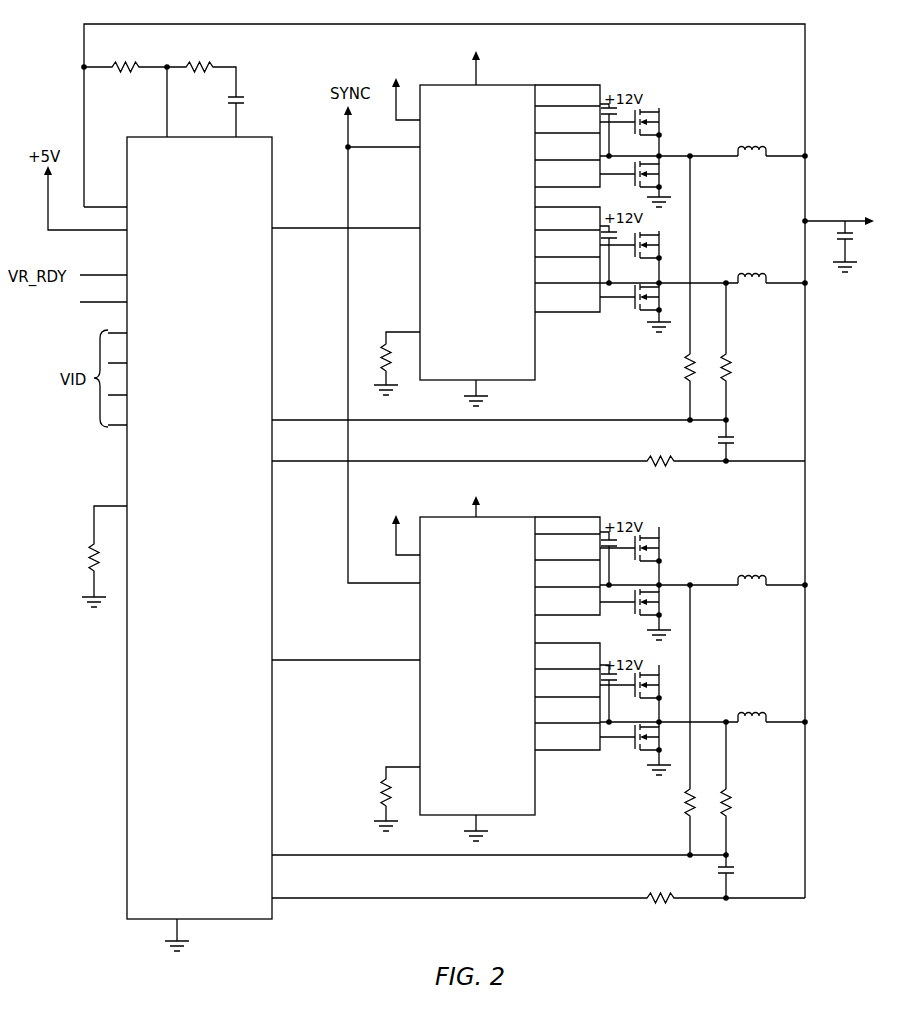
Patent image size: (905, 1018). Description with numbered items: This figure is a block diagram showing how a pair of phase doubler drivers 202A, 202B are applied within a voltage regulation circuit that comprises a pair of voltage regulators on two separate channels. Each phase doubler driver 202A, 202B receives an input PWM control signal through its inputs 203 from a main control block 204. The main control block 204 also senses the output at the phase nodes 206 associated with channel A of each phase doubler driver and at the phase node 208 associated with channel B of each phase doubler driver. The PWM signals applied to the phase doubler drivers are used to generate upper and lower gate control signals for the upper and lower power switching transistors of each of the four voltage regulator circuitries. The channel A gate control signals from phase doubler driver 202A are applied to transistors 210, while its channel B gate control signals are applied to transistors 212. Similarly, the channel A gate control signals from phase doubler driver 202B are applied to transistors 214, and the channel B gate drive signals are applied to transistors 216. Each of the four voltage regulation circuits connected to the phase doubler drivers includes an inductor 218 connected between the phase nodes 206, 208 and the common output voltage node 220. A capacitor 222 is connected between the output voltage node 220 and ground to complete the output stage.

The phase doubler driver 202A is at (535, 360).
The phase doubler driver 202B is at (535, 797).
The inputs 203 is at (312, 230).
The main control block 204 is at (150, 676).
The phase nodes 206 is at (663, 153).
The phase node 208 is at (663, 282).
The transistors 210 is at (661, 108).
The transistors 212 is at (632, 238).
The transistors 214 is at (634, 548).
The transistors 216 is at (655, 687).
The inductor 218 is at (757, 140).
The output voltage node 220 is at (872, 223).
The capacitor 222 is at (836, 240).